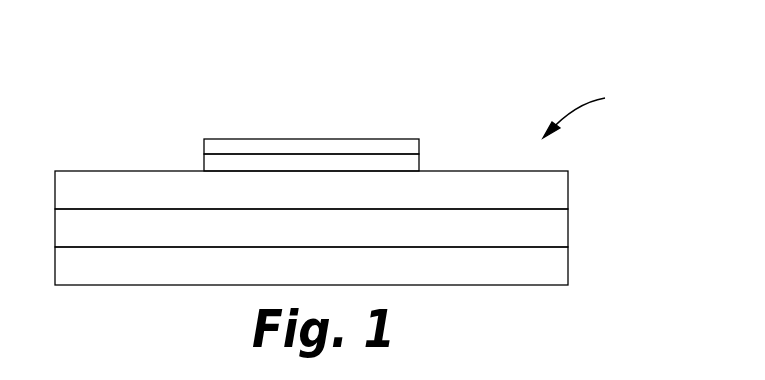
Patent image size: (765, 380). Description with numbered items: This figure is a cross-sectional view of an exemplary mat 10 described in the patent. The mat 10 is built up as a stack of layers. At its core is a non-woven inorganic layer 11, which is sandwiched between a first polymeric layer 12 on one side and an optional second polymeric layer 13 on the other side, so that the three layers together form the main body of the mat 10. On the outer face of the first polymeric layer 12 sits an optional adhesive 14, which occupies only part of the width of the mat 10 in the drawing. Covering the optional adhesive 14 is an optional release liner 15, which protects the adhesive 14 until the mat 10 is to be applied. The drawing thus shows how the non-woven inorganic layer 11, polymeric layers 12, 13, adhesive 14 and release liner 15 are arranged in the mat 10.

The mat 10 is at (592, 110).
The non-woven inorganic layer 11 is at (562, 230).
The first polymeric layer 12 is at (562, 192).
The second polymeric layer 13 is at (562, 268).
The adhesive 14 is at (213, 162).
The release liner 15 is at (398, 145).